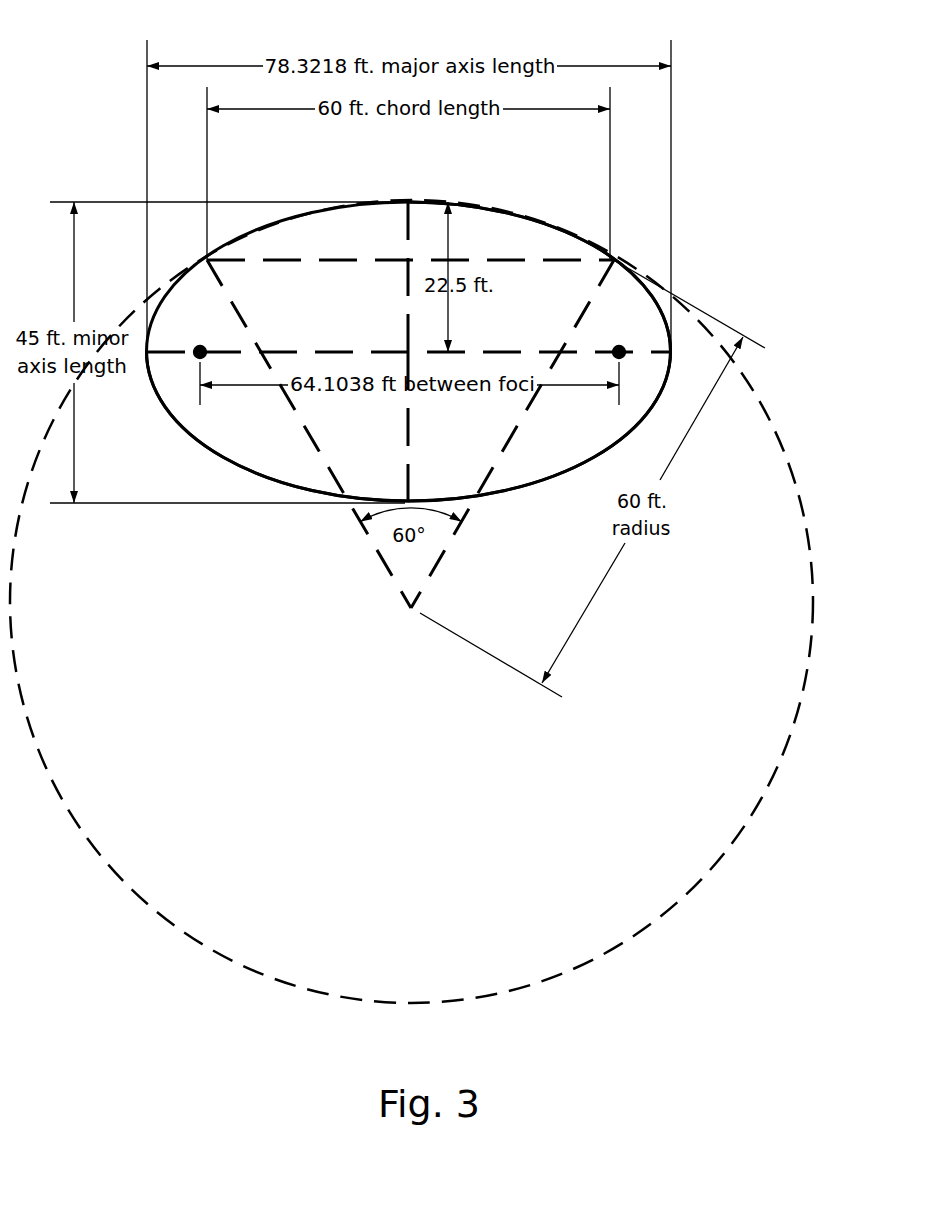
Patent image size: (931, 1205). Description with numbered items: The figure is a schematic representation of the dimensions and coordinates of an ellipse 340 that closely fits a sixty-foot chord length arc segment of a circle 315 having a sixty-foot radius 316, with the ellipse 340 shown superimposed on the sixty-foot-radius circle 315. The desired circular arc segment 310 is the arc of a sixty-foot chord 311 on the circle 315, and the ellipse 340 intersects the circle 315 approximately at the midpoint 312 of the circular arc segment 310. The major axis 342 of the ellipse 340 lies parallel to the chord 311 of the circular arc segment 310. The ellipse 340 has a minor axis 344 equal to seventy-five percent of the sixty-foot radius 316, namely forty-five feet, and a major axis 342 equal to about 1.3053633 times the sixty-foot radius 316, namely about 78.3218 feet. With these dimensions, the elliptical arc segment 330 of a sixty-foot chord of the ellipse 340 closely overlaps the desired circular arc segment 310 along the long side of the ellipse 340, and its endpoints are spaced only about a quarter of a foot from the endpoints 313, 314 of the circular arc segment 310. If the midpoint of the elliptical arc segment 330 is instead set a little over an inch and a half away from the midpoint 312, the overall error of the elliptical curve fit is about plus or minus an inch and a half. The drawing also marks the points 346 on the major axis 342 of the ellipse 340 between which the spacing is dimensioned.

The circular arc segment 310 is at (409, 336).
The chord 311 is at (410, 292).
The midpoint 312 is at (448, 253).
The endpoint 313 is at (269, 414).
The endpoint 314 is at (689, 284).
The circle 315 is at (411, 601).
The radius 316 is at (512, 434).
The elliptical arc segment 330 is at (540, 257).
The ellipse 340 is at (409, 444).
The major axis 342 is at (409, 327).
The minor axis 344 is at (444, 426).
The foci of ellipse 346 is at (411, 327).